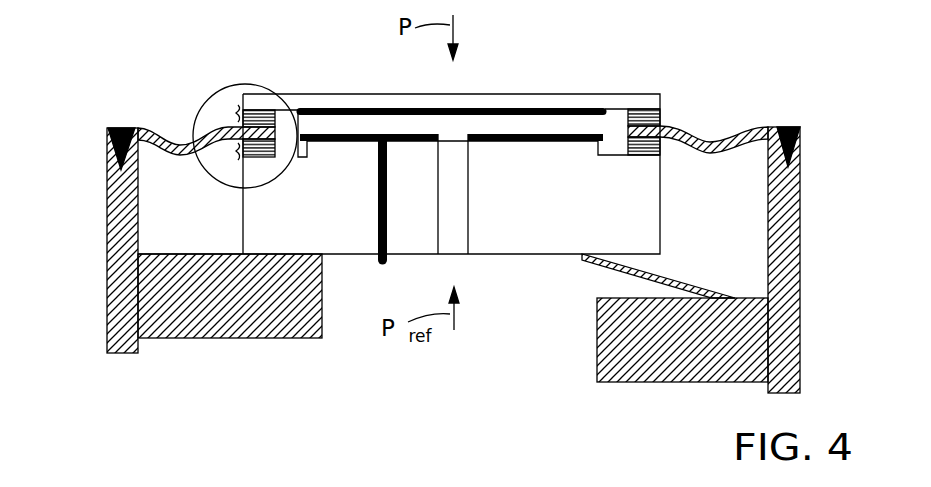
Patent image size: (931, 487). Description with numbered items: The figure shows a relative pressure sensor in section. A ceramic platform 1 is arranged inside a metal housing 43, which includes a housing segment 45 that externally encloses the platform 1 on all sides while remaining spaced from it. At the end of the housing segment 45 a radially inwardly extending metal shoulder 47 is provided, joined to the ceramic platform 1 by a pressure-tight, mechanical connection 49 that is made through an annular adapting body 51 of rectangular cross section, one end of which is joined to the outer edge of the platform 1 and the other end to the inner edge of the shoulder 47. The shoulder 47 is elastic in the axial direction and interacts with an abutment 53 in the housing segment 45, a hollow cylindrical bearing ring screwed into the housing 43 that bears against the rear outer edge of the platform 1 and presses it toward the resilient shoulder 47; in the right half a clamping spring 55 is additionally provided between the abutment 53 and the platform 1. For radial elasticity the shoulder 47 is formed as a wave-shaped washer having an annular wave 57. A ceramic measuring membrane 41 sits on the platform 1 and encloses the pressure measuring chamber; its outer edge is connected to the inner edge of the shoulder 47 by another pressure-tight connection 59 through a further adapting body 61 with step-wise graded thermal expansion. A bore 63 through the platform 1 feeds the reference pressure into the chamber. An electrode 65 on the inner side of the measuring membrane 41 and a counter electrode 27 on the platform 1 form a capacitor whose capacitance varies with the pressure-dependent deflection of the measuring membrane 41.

The ceramic platform 1 is at (495, 221).
The counter electrode 27 is at (564, 143).
The measuring membrane 41 is at (380, 100).
The metal housing 43 is at (95, 173).
The housing segment 45 is at (107, 225).
The shoulder 47 is at (157, 128).
The pressure-tight mechanical connection 49 is at (232, 151).
The adapting body 51 is at (257, 153).
The abutment 53 is at (232, 318).
The clamping spring 55 is at (625, 275).
The annular wave 57 is at (712, 121).
The pressure-tight mechanical connection 59 is at (232, 113).
The further adapting body 61 is at (263, 118).
The bore 63 is at (438, 221).
The electrode 65 is at (492, 110).